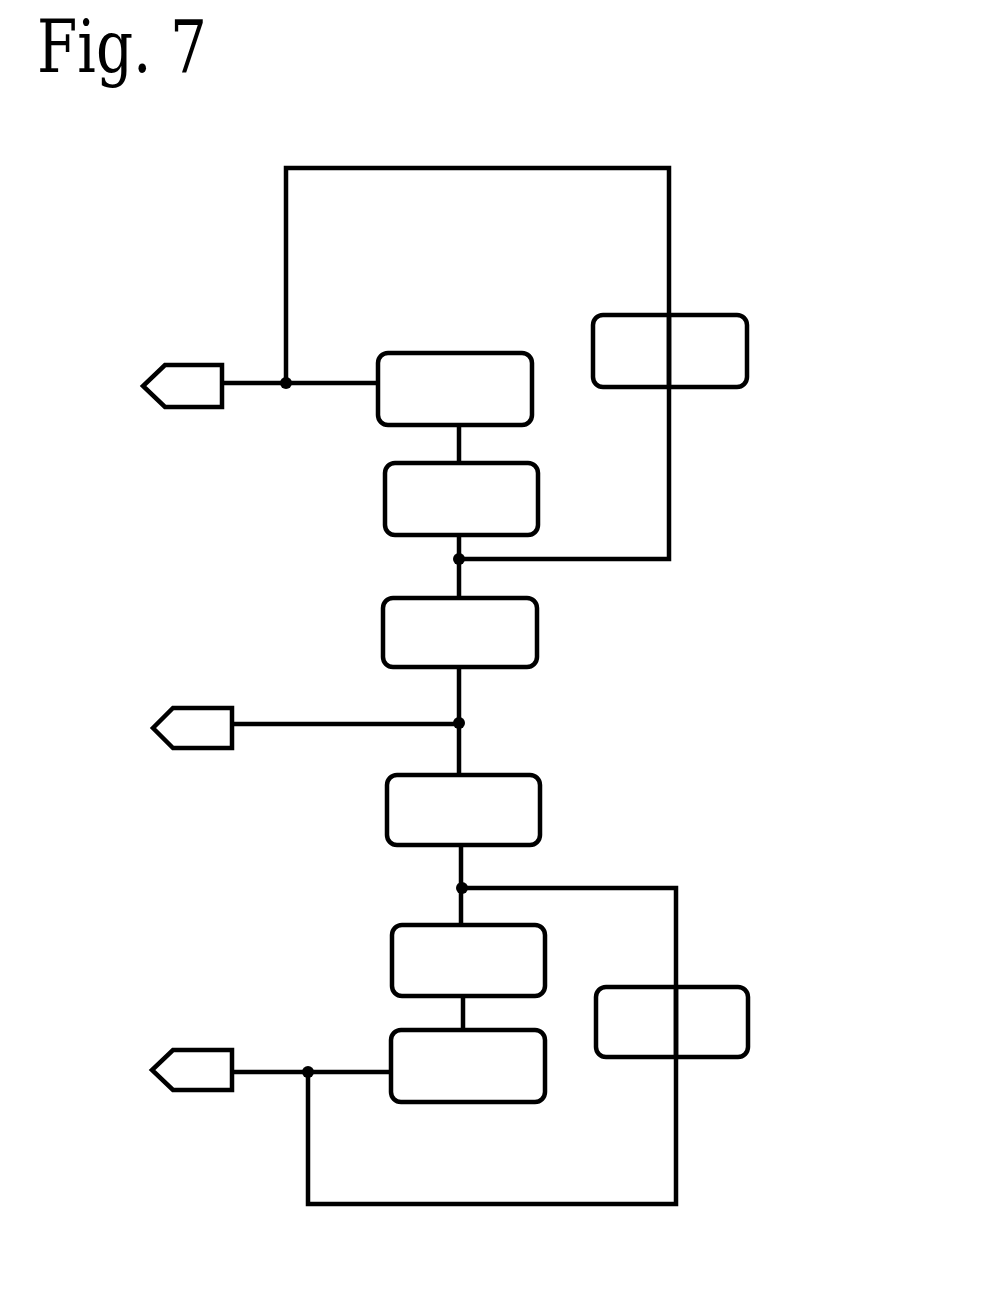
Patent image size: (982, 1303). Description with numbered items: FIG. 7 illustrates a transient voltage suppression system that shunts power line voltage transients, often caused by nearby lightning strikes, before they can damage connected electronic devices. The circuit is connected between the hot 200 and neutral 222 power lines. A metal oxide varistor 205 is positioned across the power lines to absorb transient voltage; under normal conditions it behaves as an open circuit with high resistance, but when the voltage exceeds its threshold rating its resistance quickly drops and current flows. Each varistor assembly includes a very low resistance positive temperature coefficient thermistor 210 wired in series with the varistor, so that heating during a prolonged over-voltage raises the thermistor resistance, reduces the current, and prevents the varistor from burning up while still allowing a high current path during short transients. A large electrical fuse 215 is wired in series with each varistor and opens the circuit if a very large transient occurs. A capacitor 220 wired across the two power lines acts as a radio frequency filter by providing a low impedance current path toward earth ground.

The hot 200 is at (185, 365).
The metal oxide varistor 205 is at (458, 353).
The positive temperature coefficient thermistor 210 is at (385, 500).
The electrical fuse 215 is at (537, 617).
The capacitor 220 is at (747, 352).
The neutral 222 is at (188, 708).